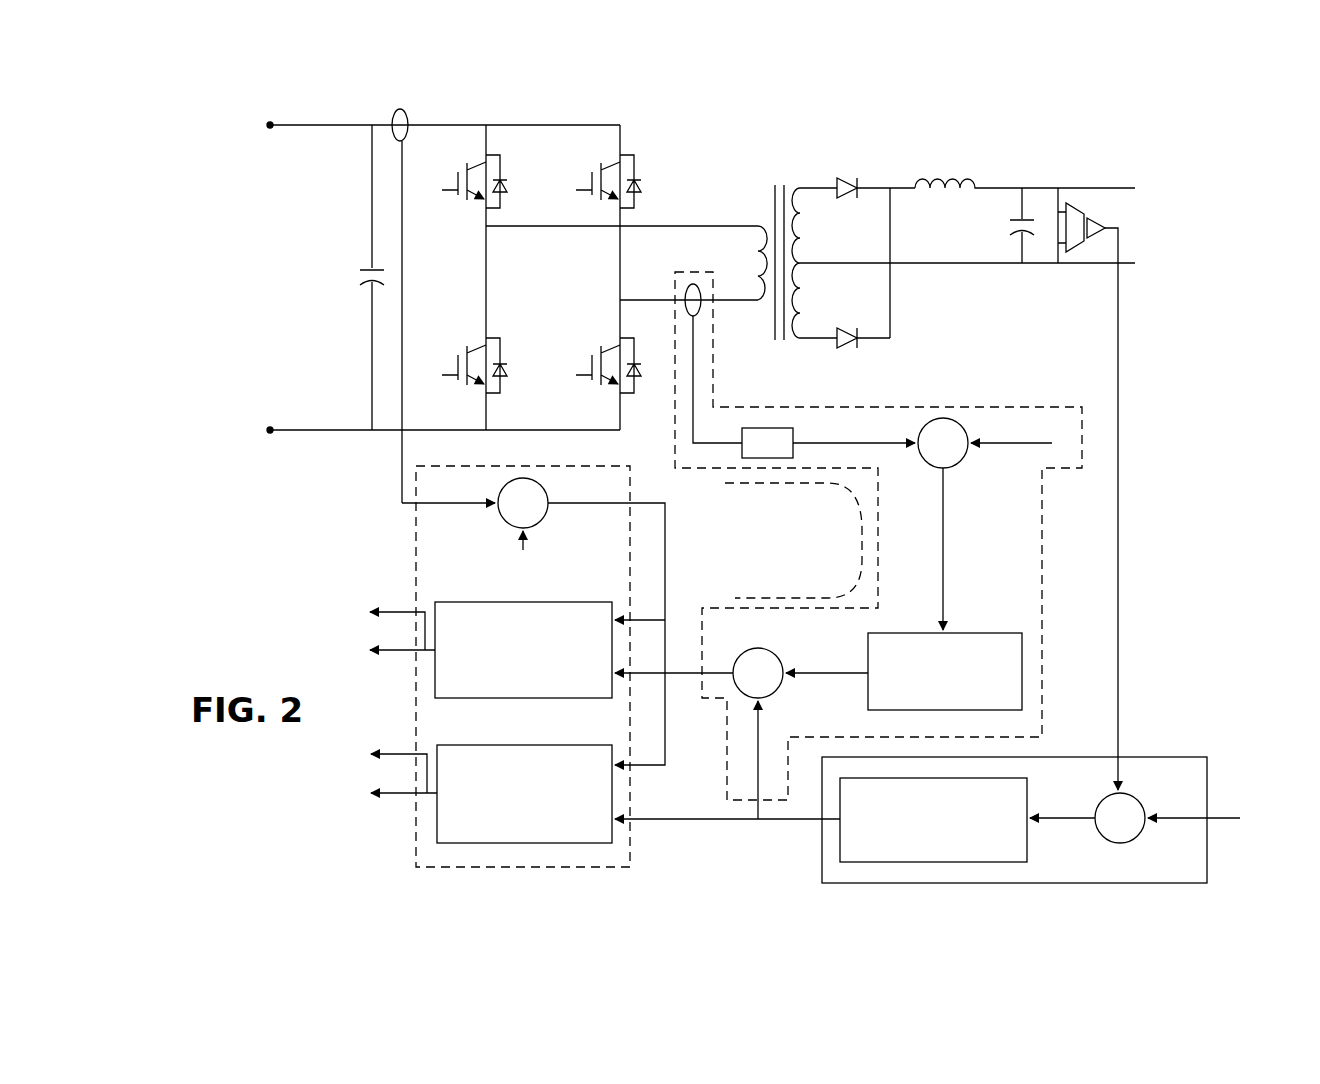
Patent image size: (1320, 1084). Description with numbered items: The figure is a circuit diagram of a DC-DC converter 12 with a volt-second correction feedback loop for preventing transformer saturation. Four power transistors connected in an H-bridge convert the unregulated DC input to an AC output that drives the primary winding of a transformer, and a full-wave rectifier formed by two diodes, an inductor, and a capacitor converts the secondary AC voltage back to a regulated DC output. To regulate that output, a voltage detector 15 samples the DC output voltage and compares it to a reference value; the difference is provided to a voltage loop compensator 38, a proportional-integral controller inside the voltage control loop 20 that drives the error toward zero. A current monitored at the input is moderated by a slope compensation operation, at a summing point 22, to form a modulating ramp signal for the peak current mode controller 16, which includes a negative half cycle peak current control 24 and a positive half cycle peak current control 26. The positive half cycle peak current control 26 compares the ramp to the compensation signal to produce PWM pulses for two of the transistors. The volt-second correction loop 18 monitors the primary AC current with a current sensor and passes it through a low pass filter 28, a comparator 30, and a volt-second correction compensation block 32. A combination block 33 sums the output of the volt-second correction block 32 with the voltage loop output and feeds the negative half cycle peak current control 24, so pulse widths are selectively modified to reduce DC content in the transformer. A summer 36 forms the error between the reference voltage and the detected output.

The DC-DC converter 12 is at (203, 166).
The voltage detector 15 is at (1092, 216).
The peak current mode controller 16 is at (416, 542).
The volt-second correction loop 18 is at (1030, 407).
The voltage control loop 20 is at (1160, 757).
The slope compensation summer 22 is at (548, 490).
The negative half cycle peak current control 24 is at (500, 698).
The positive half cycle peak current control 26 is at (525, 745).
The low pass filter 28 is at (767, 428).
The comparator 30 is at (940, 418).
The volt-second correction compensation block 32 is at (985, 633).
The combination block 33 is at (763, 648).
The voltage error summer 36 is at (1128, 843).
The voltage loop compensator 38 is at (1027, 790).